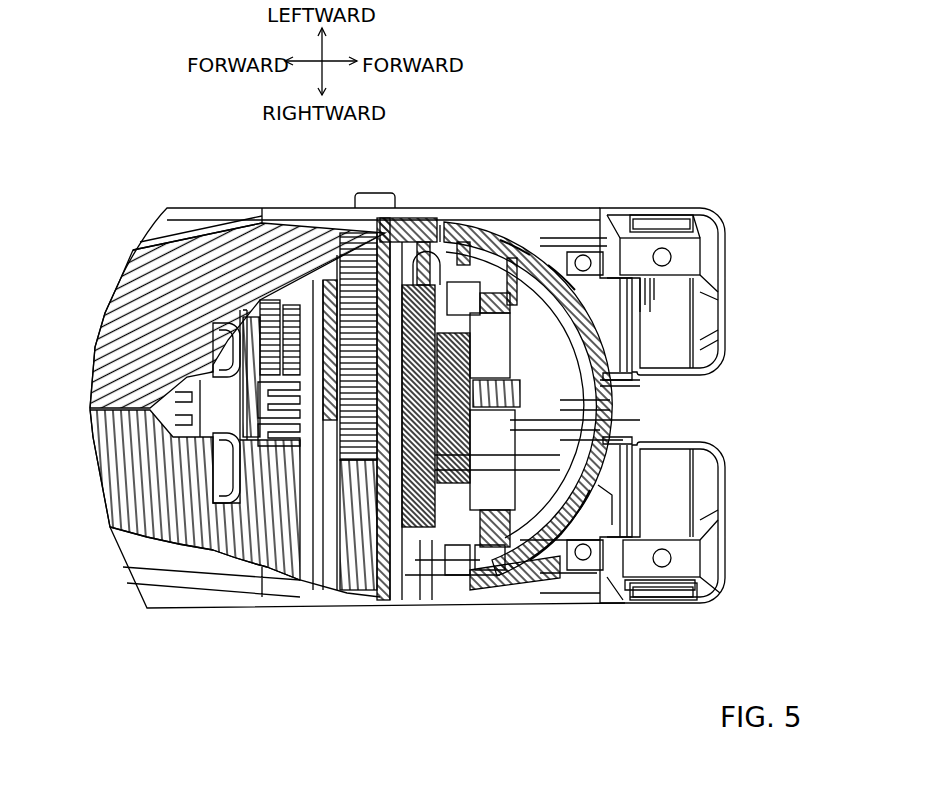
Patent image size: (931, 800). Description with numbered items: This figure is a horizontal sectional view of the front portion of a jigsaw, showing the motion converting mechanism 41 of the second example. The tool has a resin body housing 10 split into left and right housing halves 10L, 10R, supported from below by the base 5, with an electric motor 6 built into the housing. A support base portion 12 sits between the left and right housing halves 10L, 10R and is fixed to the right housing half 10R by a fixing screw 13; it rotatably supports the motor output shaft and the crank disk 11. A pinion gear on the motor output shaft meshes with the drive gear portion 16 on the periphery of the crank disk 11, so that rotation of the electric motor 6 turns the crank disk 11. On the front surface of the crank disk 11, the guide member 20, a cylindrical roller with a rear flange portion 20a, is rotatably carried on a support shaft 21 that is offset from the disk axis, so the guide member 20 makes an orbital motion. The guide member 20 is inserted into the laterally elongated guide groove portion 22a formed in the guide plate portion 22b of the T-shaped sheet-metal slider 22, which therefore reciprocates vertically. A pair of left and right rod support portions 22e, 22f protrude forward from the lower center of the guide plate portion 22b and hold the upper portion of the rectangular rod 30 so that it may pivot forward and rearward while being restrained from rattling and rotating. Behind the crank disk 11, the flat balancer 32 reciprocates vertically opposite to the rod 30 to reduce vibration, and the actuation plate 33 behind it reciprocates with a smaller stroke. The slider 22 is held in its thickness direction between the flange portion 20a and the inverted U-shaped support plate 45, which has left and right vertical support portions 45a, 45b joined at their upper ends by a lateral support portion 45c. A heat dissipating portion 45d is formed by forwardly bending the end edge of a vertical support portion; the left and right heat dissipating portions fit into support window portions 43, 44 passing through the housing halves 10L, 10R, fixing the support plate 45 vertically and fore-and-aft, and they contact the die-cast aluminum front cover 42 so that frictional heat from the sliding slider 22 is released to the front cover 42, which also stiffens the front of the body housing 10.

The base 5 is at (207, 608).
The electric motor 6 is at (207, 423).
The body housing 10 is at (236, 252).
The left housing half 10L is at (190, 307).
The right housing half 10R is at (157, 505).
The crank disk 11 is at (451, 224).
The support base portion 12 is at (360, 383).
The fixing screw 13 is at (345, 590).
The drive gear portion 16 is at (427, 575).
The guide member 20 is at (540, 352).
The flange portion 20a is at (470, 243).
The support shaft 21 is at (545, 403).
The slider 22 is at (672, 240).
The guide groove portion 22a is at (457, 577).
The guide plate portion 22b is at (487, 577).
The left rod support portion 22e is at (600, 381).
The right rod support portion 22f is at (615, 457).
The rod 30 is at (545, 420).
The balancer 32 is at (413, 218).
The actuation plate 33 is at (375, 193).
The motion converting mechanism 41 is at (645, 582).
The front cover 42 is at (605, 497).
The support window portion 43 is at (497, 350).
The support window portion 44 is at (510, 575).
The support plate 45 is at (572, 419).
The left vertical support portion 45a is at (548, 270).
The right vertical support portion 45b is at (560, 580).
The lateral support portion 45c is at (532, 575).
The heat dissipating portion 45d is at (508, 260).